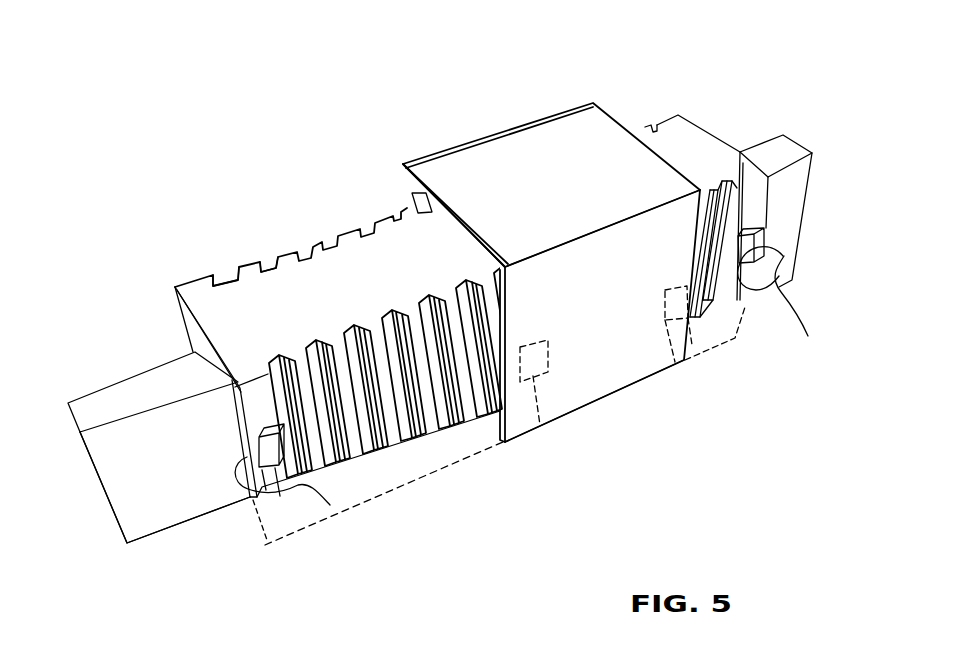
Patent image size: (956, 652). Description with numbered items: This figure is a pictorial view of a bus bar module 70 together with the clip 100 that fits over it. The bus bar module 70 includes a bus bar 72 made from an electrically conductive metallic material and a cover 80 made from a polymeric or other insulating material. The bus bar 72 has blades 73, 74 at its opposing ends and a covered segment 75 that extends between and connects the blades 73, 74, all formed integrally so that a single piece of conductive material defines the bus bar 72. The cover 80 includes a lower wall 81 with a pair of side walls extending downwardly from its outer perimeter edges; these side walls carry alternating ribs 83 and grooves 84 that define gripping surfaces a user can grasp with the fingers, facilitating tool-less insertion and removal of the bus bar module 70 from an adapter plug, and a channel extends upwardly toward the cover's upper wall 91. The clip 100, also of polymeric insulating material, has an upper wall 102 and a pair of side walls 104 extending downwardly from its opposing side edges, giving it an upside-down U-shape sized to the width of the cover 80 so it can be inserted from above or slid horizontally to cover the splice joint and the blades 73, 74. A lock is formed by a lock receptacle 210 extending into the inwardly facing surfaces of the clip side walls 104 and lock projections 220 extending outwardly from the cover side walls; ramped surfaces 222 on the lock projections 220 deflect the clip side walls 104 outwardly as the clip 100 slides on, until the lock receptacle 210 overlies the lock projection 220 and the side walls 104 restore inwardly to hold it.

The bus bar module 70 is at (147, 170).
The bus bar 72 is at (66, 404).
The blade 73 is at (177, 503).
The blade 74 is at (782, 147).
The covered segment 75 is at (412, 393).
The cover 80 is at (174, 286).
The lower wall 81 is at (283, 500).
The ribs 83 is at (237, 273).
The grooves 84 is at (296, 254).
The upper wall 91 is at (687, 143).
The clip 100 is at (568, 137).
The upper wall 102 is at (597, 225).
The side walls 104 is at (594, 378).
The lock receptacle 210 is at (540, 425).
The lock projections 220 is at (258, 429).
The ramped surfaces 222 is at (330, 505).